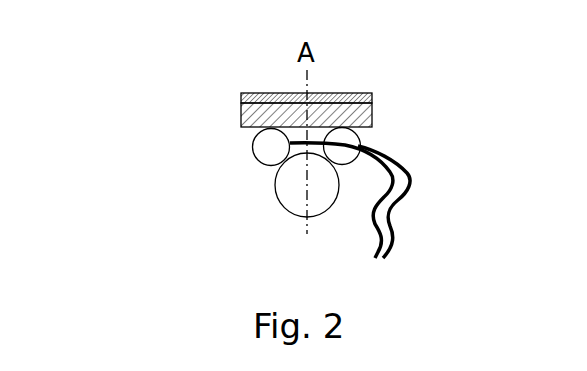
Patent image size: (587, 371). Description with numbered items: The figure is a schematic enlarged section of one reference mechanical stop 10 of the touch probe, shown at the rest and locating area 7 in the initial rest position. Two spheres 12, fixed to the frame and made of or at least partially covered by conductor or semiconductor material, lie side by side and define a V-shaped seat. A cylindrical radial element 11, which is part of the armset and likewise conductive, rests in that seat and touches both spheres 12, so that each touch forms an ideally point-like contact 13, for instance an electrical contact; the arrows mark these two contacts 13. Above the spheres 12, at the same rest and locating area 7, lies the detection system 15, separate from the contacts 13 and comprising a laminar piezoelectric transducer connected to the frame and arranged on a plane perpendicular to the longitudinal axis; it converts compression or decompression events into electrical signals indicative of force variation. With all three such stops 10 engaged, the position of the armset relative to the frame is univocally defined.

The rest and locating area 7 is at (255, 112).
The reference mechanical stop 10 is at (212, 186).
The radial element 11 is at (280, 195).
The sphere 12 is at (268, 148).
The contact 13 is at (322, 179).
The detection system 15 is at (262, 99).